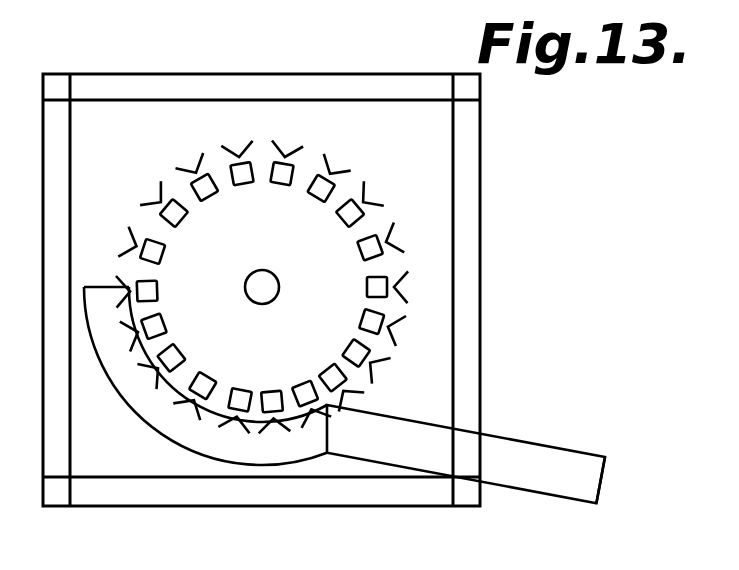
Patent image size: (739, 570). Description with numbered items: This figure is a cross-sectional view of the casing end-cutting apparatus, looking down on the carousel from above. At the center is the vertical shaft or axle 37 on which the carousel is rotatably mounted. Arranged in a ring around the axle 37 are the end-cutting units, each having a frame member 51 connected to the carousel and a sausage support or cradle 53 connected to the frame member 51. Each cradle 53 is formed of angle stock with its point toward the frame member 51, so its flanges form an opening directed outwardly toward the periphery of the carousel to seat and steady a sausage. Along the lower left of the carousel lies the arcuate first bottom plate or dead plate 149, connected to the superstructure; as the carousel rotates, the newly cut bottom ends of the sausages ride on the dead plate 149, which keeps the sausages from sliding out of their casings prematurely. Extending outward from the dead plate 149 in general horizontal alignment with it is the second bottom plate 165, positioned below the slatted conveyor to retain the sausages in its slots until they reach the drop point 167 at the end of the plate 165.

The vertical shaft or axle 37 is at (286, 279).
The frame member 51 is at (207, 198).
The sausage support or cradle 53 is at (384, 201).
The arcuate first bottom plate or dead plate 149 is at (174, 441).
The second bottom plate 165 is at (556, 444).
The drop point 167 is at (603, 483).